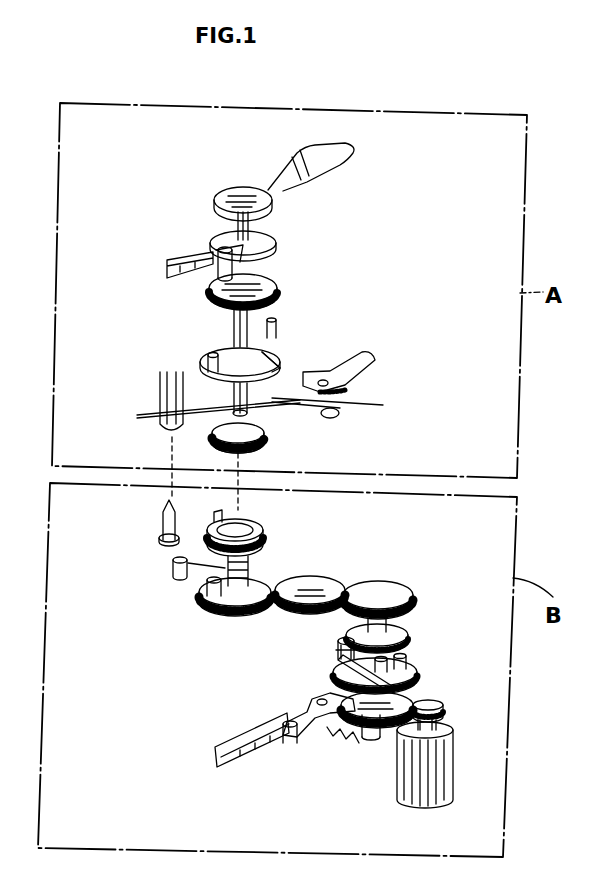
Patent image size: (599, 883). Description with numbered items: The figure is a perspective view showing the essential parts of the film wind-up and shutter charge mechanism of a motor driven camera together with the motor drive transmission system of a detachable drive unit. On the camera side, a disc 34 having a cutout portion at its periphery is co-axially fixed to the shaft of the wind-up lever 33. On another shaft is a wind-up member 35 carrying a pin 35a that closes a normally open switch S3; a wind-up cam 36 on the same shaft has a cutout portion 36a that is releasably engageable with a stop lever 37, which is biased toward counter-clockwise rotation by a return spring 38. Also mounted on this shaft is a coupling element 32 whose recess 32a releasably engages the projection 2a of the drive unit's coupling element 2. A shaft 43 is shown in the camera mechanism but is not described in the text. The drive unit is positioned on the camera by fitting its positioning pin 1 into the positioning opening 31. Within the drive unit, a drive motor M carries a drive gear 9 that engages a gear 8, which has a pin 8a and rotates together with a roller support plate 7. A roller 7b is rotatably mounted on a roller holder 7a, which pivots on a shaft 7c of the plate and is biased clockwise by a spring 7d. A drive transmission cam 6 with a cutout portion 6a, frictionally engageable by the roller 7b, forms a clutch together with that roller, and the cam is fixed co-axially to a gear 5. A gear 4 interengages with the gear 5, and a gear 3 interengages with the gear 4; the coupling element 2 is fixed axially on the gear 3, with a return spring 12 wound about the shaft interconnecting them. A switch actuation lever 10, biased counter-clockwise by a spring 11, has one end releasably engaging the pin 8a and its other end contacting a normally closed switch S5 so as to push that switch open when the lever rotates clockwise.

The wind-up lever 33 is at (252, 185).
The disc 34 is at (207, 230).
The wind-up member 35 is at (270, 280).
The pin 35a is at (213, 282).
The normally open switch S3 is at (167, 265).
The shaft 43 is at (263, 317).
The wind-up cam 36 is at (220, 353).
The cutout portion 36a is at (277, 363).
The positioning opening 31 is at (163, 392).
The stop lever 37 is at (375, 372).
The return spring 38 is at (148, 420).
The coupling element 32 is at (265, 437).
The recess 32a is at (250, 447).
The positioning pin 1 is at (160, 520).
The coupling element 2 is at (213, 547).
The projection 2a is at (257, 520).
The return spring 12 is at (193, 567).
The gear 3 is at (237, 620).
The gear 4 is at (315, 582).
The gear 5 is at (377, 587).
The drive transmission cam 6 is at (400, 632).
The cutout portion 6a is at (402, 638).
The roller support plate 7 is at (413, 667).
The roller holder 7a is at (340, 670).
The roller 7b is at (340, 637).
The shaft 7c is at (373, 730).
The spring 7d is at (337, 655).
The gear 8 is at (397, 700).
The pin 8a is at (340, 682).
The drive gear 9 is at (440, 705).
The switch actuation lever 10 is at (303, 708).
The spring 11 is at (332, 742).
The normally closed switch S5 is at (213, 760).
The drive motor M is at (443, 775).